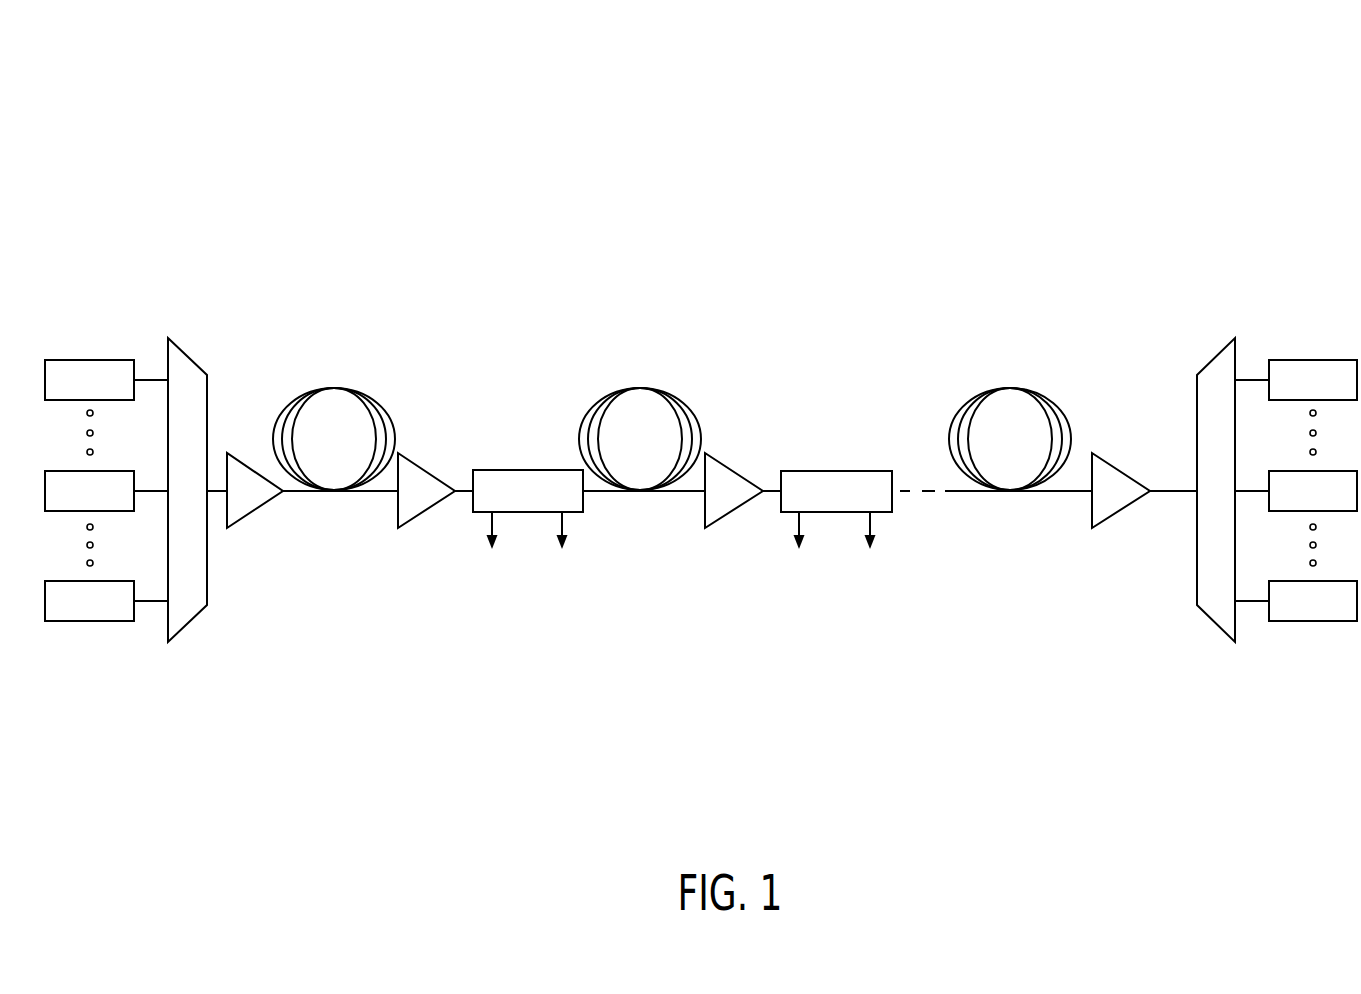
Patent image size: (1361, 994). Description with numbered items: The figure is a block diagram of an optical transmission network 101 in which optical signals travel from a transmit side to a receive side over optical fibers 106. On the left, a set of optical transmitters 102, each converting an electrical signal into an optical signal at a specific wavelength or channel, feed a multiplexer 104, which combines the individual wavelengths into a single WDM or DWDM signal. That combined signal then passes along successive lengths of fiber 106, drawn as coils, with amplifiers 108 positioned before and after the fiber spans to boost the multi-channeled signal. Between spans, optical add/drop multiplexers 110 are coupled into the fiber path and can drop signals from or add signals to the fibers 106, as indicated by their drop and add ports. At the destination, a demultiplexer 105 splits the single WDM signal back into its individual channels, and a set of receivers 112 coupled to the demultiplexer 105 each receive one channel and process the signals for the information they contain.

The optical transmission network 101 is at (141, 92).
The transmitters 102 is at (80, 360).
The multiplexer 104 is at (182, 351).
The demultiplexer 105 is at (1218, 352).
The optical fibers 106 is at (327, 388).
The amplifiers 108 is at (250, 514).
The optical add/drop multiplexers 110 is at (514, 470).
The receivers 112 is at (1332, 360).